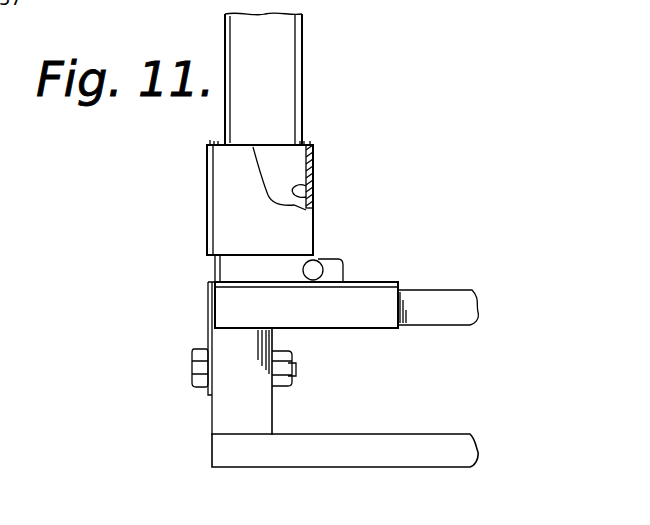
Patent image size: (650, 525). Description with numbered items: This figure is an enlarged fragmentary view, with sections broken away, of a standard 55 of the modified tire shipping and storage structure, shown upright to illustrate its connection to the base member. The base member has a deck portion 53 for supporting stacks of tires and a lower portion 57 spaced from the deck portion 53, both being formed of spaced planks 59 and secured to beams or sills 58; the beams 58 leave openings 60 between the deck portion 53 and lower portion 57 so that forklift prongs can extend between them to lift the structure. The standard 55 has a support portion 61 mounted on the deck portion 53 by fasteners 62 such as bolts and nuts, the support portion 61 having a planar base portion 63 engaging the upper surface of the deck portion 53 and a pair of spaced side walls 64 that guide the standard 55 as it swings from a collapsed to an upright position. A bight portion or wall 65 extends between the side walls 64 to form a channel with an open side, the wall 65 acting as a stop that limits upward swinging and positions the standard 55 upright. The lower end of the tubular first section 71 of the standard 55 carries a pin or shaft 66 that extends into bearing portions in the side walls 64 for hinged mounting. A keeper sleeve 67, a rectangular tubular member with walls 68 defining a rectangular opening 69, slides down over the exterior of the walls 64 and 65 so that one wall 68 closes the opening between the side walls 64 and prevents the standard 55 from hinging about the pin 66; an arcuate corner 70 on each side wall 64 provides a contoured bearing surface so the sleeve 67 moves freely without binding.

The deck portion 53 is at (415, 290).
The standard 55 is at (303, 66).
The lower portion 57 is at (288, 467).
The beam 58 is at (274, 405).
The plank 59 is at (360, 433).
The opening 60 is at (465, 372).
The support portion 61 is at (208, 304).
The fastener 62 is at (192, 372).
The planar base portion 63 is at (350, 283).
The side wall 64 is at (293, 167).
The bight portion or wall 65 is at (218, 144).
The pin or shaft 66 is at (325, 262).
The sleeve 67 is at (207, 212).
The wall 68 is at (232, 178).
The rectangular opening 69 is at (314, 190).
The arcuate corner 70 is at (306, 145).
The first section 71 is at (303, 44).